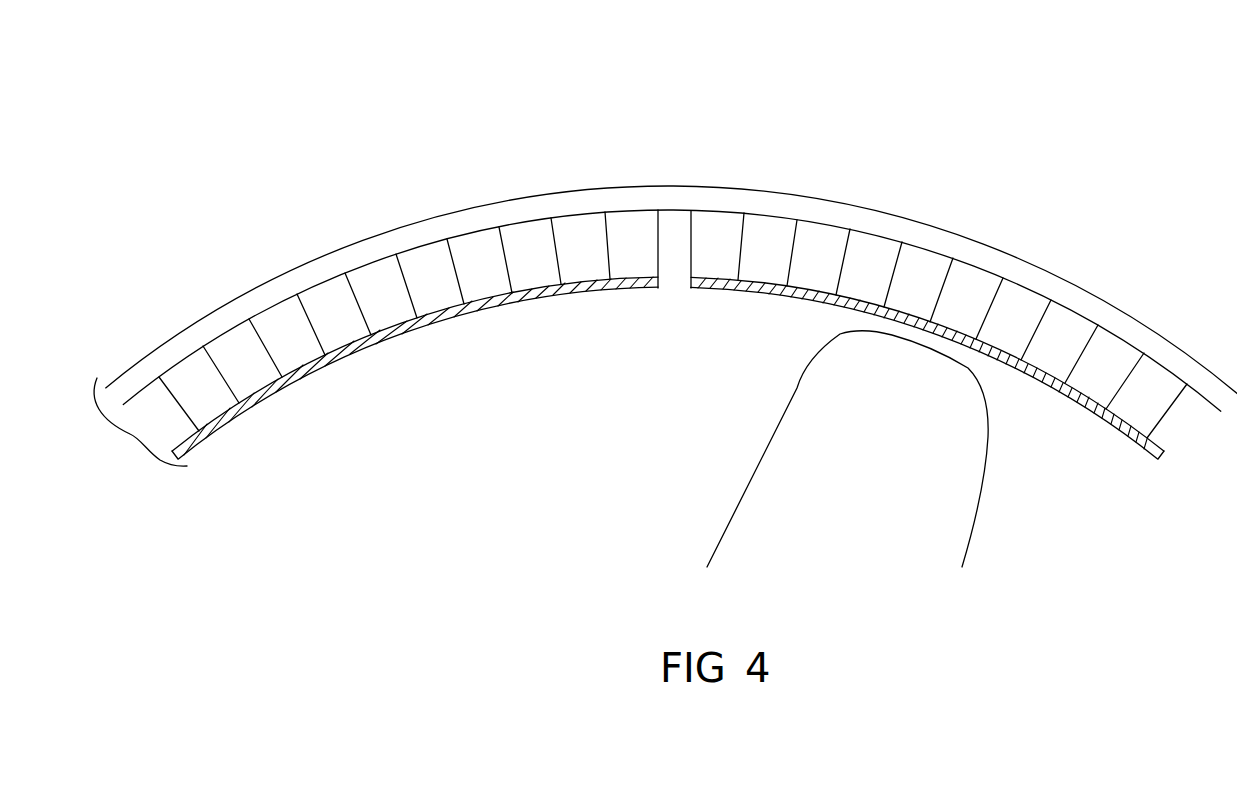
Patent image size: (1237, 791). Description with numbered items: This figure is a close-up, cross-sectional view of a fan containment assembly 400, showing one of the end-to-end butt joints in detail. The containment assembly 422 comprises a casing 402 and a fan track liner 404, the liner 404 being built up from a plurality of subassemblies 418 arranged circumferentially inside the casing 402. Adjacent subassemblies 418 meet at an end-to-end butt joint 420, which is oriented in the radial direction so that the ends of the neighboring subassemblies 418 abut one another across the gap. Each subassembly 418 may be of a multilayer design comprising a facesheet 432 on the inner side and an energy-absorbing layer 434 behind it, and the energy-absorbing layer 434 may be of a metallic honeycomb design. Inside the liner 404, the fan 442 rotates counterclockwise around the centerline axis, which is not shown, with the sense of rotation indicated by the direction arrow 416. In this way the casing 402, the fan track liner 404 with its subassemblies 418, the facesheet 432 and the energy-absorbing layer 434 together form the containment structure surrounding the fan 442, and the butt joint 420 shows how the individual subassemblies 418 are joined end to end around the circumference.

The containment assembly 400 is at (248, 85).
The casing 402 is at (1016, 262).
The fan track liner 404 is at (716, 316).
The direction arrow 416 is at (757, 435).
The subassemblies 418 is at (830, 264).
The end-to-end butt joint 420 is at (676, 238).
The containment assembly 422 is at (140, 422).
The facesheet 432 is at (1088, 434).
The energy-absorbing layer 434 is at (1192, 440).
The fan 442 is at (876, 474).